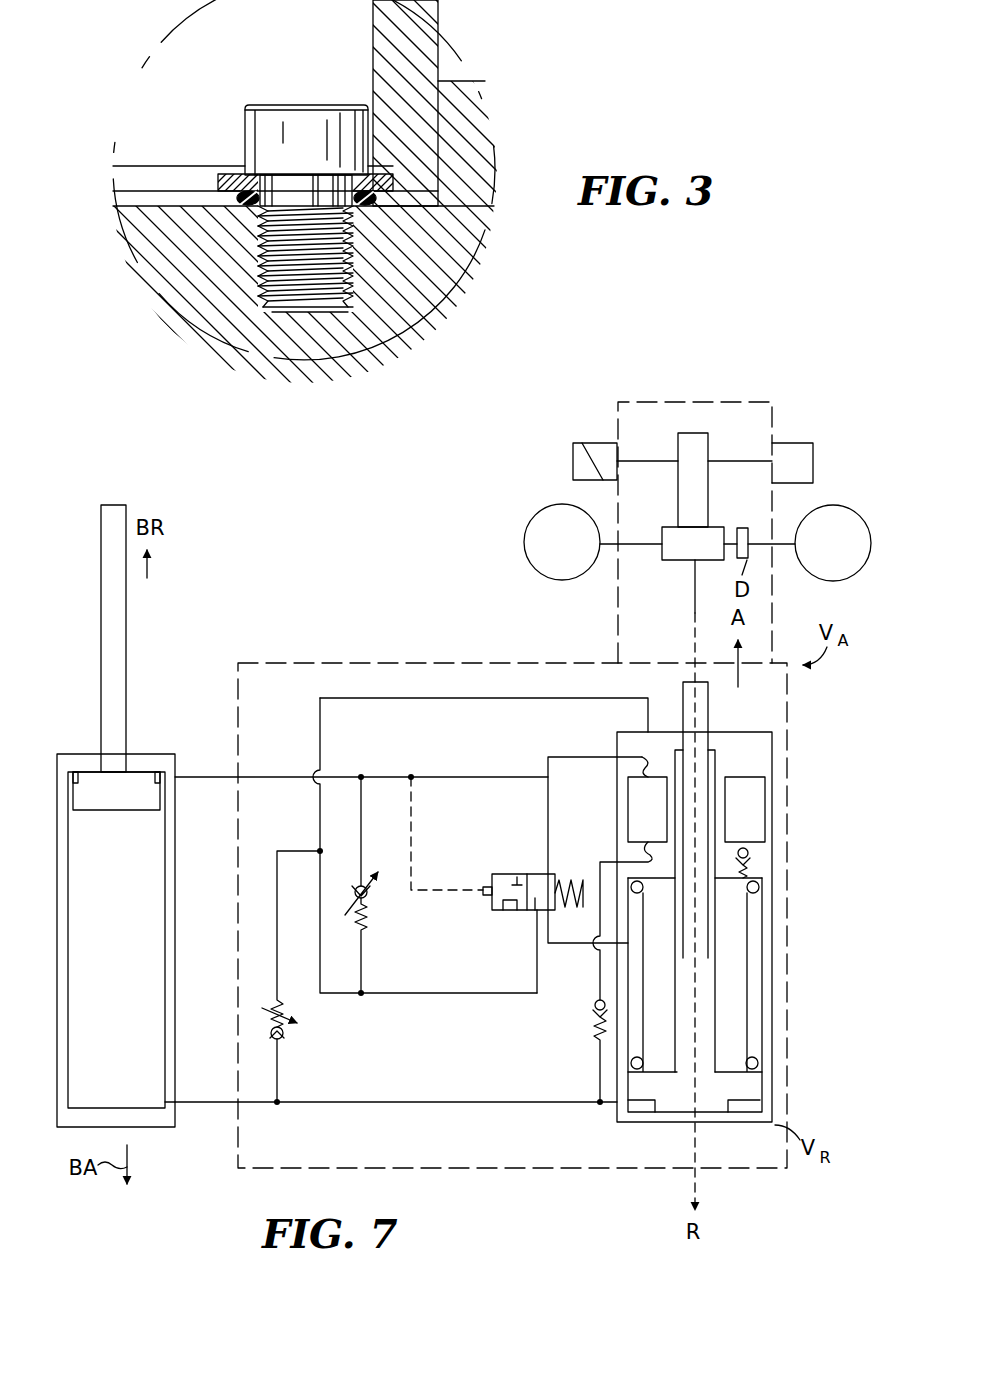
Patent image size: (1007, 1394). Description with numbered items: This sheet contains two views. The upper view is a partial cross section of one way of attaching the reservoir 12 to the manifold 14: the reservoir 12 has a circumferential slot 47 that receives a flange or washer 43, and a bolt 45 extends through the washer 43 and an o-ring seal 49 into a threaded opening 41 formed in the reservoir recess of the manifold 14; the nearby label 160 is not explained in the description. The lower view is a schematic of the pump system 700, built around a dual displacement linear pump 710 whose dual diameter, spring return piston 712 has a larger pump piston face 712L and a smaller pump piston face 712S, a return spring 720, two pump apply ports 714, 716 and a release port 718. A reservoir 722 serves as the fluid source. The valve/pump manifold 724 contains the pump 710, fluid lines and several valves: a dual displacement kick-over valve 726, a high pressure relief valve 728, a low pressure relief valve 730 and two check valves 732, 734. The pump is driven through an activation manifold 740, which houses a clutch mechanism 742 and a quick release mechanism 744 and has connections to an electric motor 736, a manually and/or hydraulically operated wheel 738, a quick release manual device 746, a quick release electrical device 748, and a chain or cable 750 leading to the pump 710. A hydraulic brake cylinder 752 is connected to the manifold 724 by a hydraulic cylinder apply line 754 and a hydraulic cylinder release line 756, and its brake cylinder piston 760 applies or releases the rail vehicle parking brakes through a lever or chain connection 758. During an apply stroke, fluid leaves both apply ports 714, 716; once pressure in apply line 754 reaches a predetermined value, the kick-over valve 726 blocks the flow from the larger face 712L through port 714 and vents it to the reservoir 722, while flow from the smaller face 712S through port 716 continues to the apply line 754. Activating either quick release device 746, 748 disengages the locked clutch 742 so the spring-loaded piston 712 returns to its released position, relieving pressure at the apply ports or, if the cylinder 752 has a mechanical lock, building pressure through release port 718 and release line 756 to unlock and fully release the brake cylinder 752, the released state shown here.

In FIG. 3, the reservoir 12 is at (192, 50).
In FIG. 3, the manifold 14 is at (447, 258).
In FIG. 3, the threaded opening 41 is at (340, 268).
In FIG. 3, the washer 43 is at (233, 167).
In FIG. 3, the bolt 45 is at (293, 130).
In FIG. 3, the circumferential slot 47 is at (393, 166).
In FIG. 3, the o-ring seal 49 is at (247, 193).
In FIG. 3, the mounting plate 160 is at (152, 177).
In FIG. 7, the pump system 700 is at (657, 350).
In FIG. 7, the dual displacement linear pump 710 is at (803, 767).
In FIG. 7, the pump piston 712 is at (793, 972).
In FIG. 7, the smaller pump piston face 712S is at (715, 840).
In FIG. 7, the larger pump piston face 712L is at (727, 1063).
In FIG. 7, the pump apply port 714 is at (612, 953).
In FIG. 7, the pump apply port 716 is at (613, 751).
In FIG. 7, the release port 718 is at (615, 1105).
In FIG. 7, the spring 720 is at (757, 1058).
In FIG. 7, the reservoir 722 is at (750, 777).
In FIG. 7, the valve/pump manifold 724 is at (617, 1173).
In FIG. 7, the dual displacement kick-over valve 726 is at (537, 875).
In FIG. 7, the high pressure relief valve 728 is at (425, 847).
In FIG. 7, the low pressure relief valve 730 is at (283, 1037).
In FIG. 7, the check valve 732 is at (592, 1015).
In FIG. 7, the check valve 734 is at (752, 851).
In FIG. 7, the electric motor 736 is at (520, 537).
In FIG. 7, the wheel 738 is at (837, 517).
In FIG. 7, the activation manifold 740 is at (615, 408).
In FIG. 7, the clutch mechanism 742 is at (667, 560).
In FIG. 7, the quick release mechanism 744 is at (697, 432).
In FIG. 7, the quick release manual device 746 is at (797, 443).
In FIG. 7, the quick release electrical device 748 is at (572, 463).
In FIG. 7, the chain or cable 750 is at (690, 650).
In FIG. 7, the hydraulic brake cylinder 752 is at (82, 752).
In FIG. 7, the hydraulic cylinder apply line 754 is at (212, 775).
In FIG. 7, the hydraulic cylinder release line 756 is at (208, 1105).
In FIG. 7, the lever or chain connection 758 is at (113, 503).
In FIG. 7, the brake cylinder piston 760 is at (137, 787).